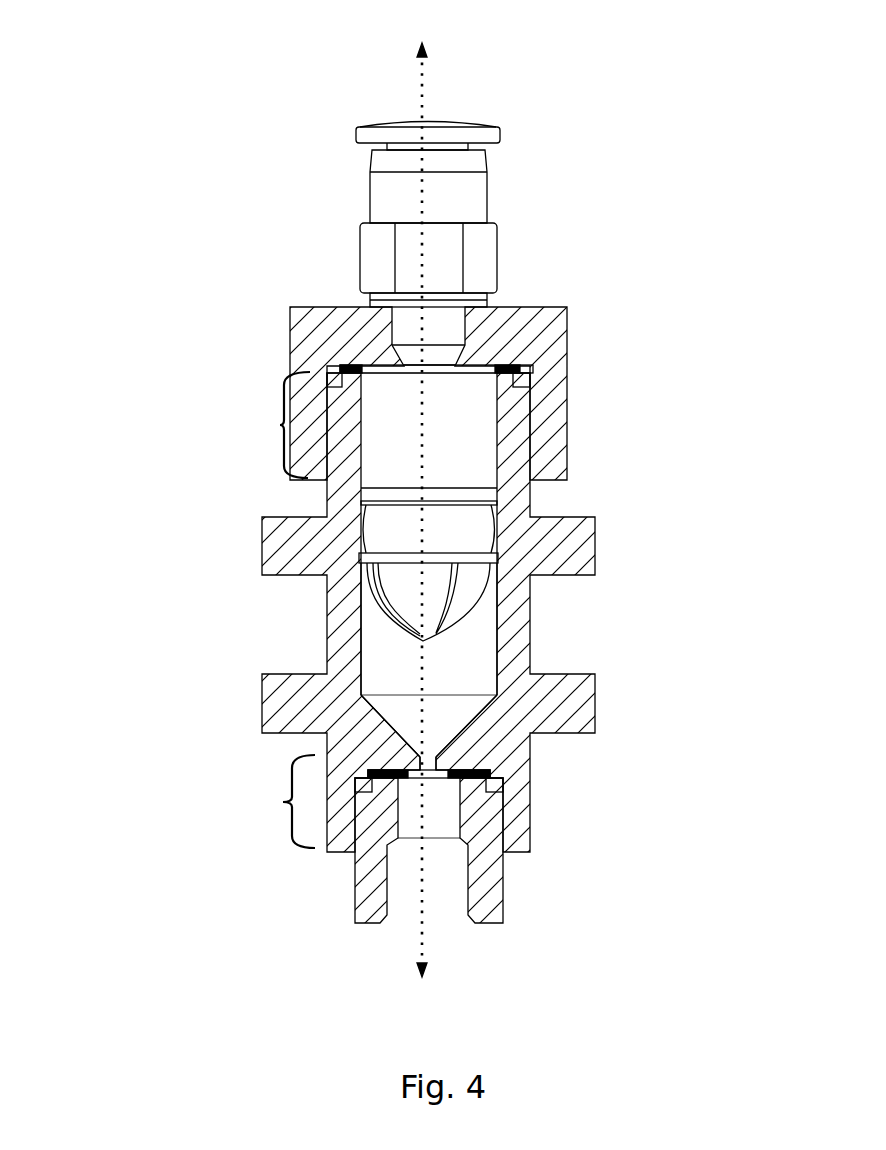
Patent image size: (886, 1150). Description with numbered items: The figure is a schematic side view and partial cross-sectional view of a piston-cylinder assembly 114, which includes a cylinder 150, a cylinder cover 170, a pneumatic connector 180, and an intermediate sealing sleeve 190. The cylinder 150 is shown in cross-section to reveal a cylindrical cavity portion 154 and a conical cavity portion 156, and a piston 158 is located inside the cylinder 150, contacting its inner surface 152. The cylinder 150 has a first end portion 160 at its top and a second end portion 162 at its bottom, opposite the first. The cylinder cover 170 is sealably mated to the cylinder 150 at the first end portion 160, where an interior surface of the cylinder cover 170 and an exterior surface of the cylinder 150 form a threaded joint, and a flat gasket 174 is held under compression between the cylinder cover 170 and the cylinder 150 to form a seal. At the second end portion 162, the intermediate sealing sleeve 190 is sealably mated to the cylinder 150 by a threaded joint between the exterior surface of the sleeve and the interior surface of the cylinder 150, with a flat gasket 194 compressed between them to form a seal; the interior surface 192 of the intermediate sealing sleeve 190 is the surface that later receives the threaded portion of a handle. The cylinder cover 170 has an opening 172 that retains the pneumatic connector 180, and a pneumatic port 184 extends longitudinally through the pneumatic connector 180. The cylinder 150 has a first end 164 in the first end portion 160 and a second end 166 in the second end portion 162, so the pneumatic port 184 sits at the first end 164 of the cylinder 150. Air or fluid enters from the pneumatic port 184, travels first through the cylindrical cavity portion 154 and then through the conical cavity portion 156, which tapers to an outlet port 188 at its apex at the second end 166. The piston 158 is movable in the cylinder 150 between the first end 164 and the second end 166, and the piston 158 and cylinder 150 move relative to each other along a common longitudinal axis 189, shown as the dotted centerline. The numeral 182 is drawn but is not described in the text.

The piston-cylinder assembly 114 is at (236, 76).
The cylinder 150 is at (599, 543).
The inner surface 152 is at (498, 660).
The cylindrical cavity portion 154 is at (389, 650).
The conical cavity portion 156 is at (389, 710).
The piston 158 is at (500, 557).
The first end portion 160 is at (247, 425).
The second end portion 162 is at (270, 800).
The first end 164 is at (443, 379).
The second end 166 is at (406, 760).
The cylinder cover 170 is at (568, 333).
The opening 172 is at (401, 357).
The flat gasket 174 is at (521, 368).
The pneumatic connector 180 is at (500, 247).
The fitting bore 182 is at (406, 318).
The pneumatic port 184 is at (451, 108).
The outlet port 188 is at (428, 745).
The common longitudinal axis 189 is at (417, 83).
The intermediate sealing sleeve 190 is at (505, 878).
The interior surface 192 is at (398, 878).
The flat gasket 194 is at (468, 782).